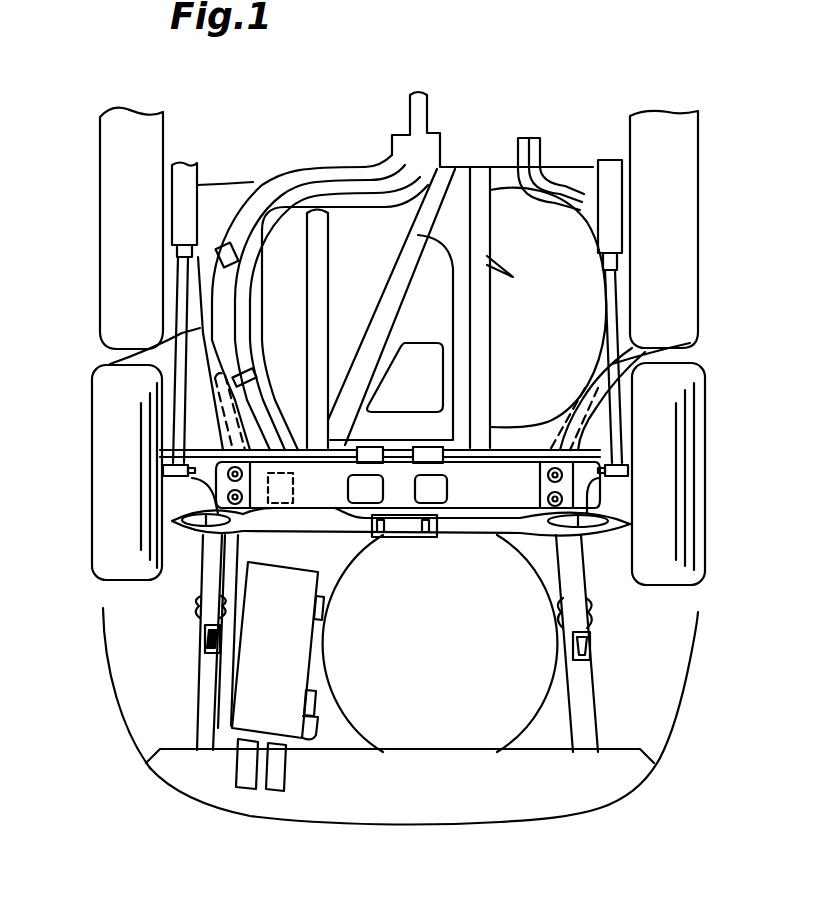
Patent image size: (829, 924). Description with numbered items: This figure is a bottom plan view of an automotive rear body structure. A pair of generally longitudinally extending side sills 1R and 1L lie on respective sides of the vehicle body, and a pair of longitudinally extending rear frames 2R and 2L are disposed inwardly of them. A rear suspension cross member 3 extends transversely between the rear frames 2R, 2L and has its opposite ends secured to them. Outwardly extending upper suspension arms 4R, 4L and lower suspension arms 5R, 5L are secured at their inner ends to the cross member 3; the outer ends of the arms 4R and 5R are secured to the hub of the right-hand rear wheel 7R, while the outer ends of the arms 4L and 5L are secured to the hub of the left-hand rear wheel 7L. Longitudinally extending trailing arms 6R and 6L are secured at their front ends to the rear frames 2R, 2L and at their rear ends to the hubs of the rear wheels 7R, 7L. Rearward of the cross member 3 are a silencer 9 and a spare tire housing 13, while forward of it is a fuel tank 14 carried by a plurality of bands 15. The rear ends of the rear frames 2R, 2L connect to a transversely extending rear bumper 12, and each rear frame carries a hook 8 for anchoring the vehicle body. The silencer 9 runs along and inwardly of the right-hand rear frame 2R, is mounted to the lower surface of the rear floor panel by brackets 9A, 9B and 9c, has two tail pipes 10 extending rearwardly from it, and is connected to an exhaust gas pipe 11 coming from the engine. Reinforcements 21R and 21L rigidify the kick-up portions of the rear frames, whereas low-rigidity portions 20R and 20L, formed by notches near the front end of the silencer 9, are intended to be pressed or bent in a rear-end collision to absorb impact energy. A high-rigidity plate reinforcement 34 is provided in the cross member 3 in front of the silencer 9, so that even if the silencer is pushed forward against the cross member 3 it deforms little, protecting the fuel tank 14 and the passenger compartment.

The side sill 1R is at (116, 246).
The side sill 1L is at (672, 187).
The rear frame 2R is at (205, 717).
The rear frame 2L is at (583, 715).
The rear suspension cross member 3 is at (530, 487).
The upper suspension arm 4R is at (163, 491).
The upper suspension arm 4L is at (593, 450).
The lower suspension arm 5R is at (162, 583).
The lower suspension arm 5L is at (603, 517).
The trailing arm 6R is at (110, 364).
The trailing arm 6L is at (672, 357).
The rear wheel 7R is at (116, 418).
The rear wheel 7L is at (670, 460).
The hook 8 is at (590, 655).
The silencer 9 is at (240, 722).
The bracket 9A is at (200, 672).
The bracket 9B is at (315, 716).
The bracket 9c is at (322, 600).
The tail pipe 10 is at (246, 789).
The exhaust gas pipe 11 is at (260, 210).
The rear bumper 12 is at (525, 793).
The spare tire housing 13 is at (407, 732).
The fuel tank 14 is at (505, 212).
The band 15 is at (473, 170).
The low-rigidity portion 20R is at (190, 603).
The low-rigidity portion 20L is at (607, 617).
The reinforcement 21R is at (215, 378).
The reinforcement 21L is at (600, 388).
The reinforcement 34 is at (293, 484).